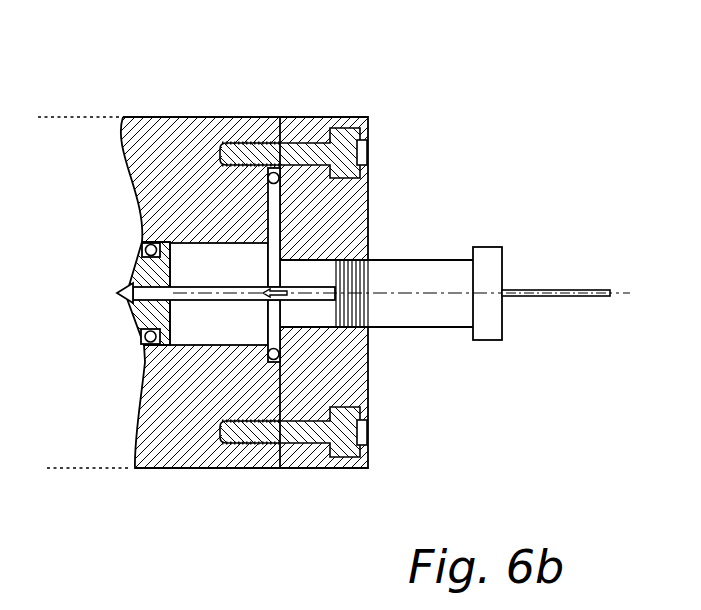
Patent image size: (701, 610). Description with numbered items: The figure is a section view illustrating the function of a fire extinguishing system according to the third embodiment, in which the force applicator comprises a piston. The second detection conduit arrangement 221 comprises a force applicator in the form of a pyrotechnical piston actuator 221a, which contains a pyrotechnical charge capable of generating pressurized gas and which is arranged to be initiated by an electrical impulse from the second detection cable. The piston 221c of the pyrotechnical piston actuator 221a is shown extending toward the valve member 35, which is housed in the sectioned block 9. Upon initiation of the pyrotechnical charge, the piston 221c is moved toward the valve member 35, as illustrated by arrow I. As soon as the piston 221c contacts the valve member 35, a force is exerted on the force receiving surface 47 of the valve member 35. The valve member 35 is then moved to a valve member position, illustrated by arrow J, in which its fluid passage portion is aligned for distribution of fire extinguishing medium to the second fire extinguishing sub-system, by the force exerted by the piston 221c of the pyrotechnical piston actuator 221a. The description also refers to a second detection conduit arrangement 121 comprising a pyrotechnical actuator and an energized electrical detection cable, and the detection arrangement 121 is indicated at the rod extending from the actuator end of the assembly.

The housing block 9 is at (247, 117).
The second pressure surface 47 is at (203, 262).
The valve member 35 is at (128, 300).
The second detection conduit arrangement 221 is at (317, 189).
The pyrotechnical piston actuator 221a is at (423, 259).
The piston 221c is at (307, 291).
The second detection conduit arrangement 121 is at (525, 288).
The arrow J is at (143, 287).
The arrow I is at (280, 300).